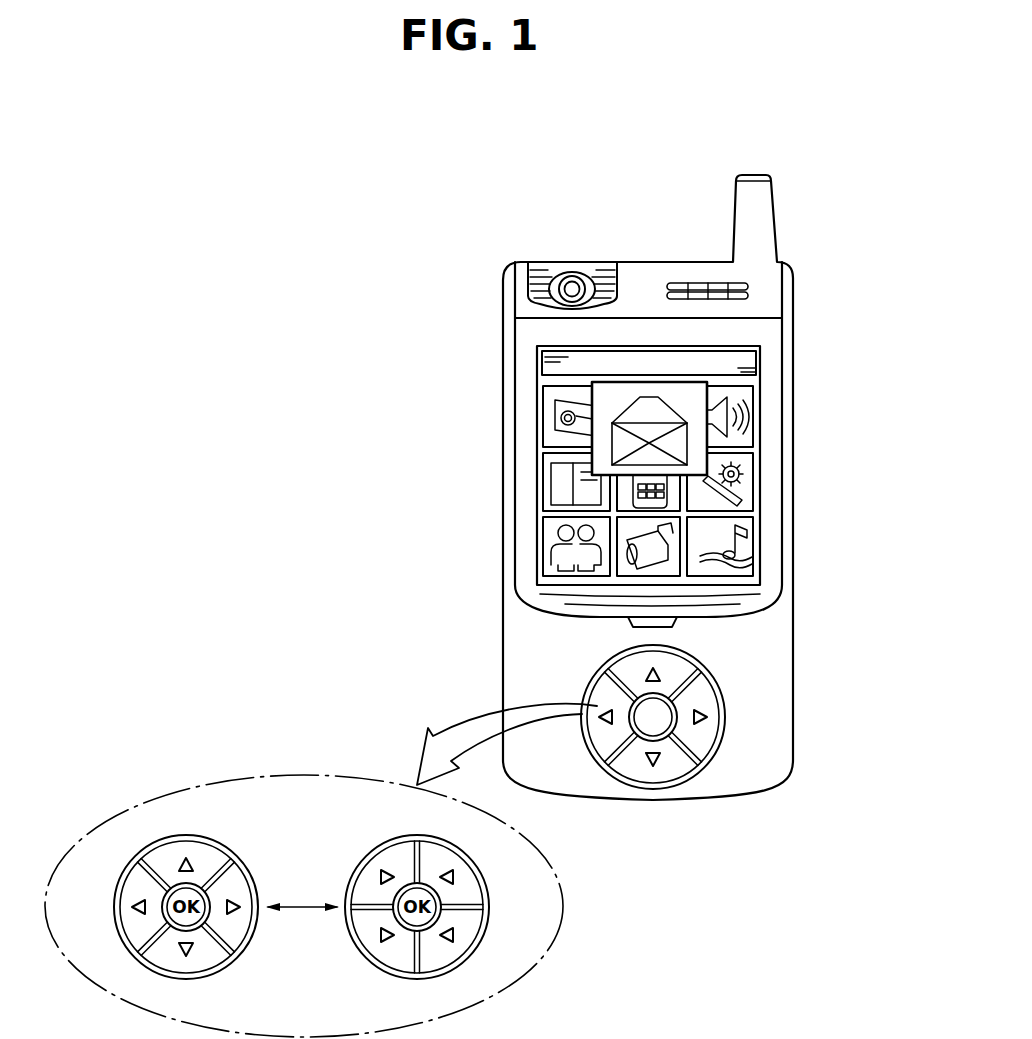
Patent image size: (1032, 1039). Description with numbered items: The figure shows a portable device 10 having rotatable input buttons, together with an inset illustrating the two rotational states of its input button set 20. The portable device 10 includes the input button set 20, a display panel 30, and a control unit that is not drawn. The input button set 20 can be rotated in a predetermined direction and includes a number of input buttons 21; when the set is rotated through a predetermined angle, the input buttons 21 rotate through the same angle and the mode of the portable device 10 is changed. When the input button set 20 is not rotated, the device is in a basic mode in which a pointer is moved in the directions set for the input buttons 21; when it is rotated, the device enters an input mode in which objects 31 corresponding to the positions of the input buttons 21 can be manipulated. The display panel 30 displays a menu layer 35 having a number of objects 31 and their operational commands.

The portable device 10 is at (846, 195).
The input button set 20 is at (717, 717).
The input buttons 21 is at (704, 688).
The display panel 30 is at (653, 513).
The objects 31 is at (603, 441).
The menu layer 35 is at (757, 382).